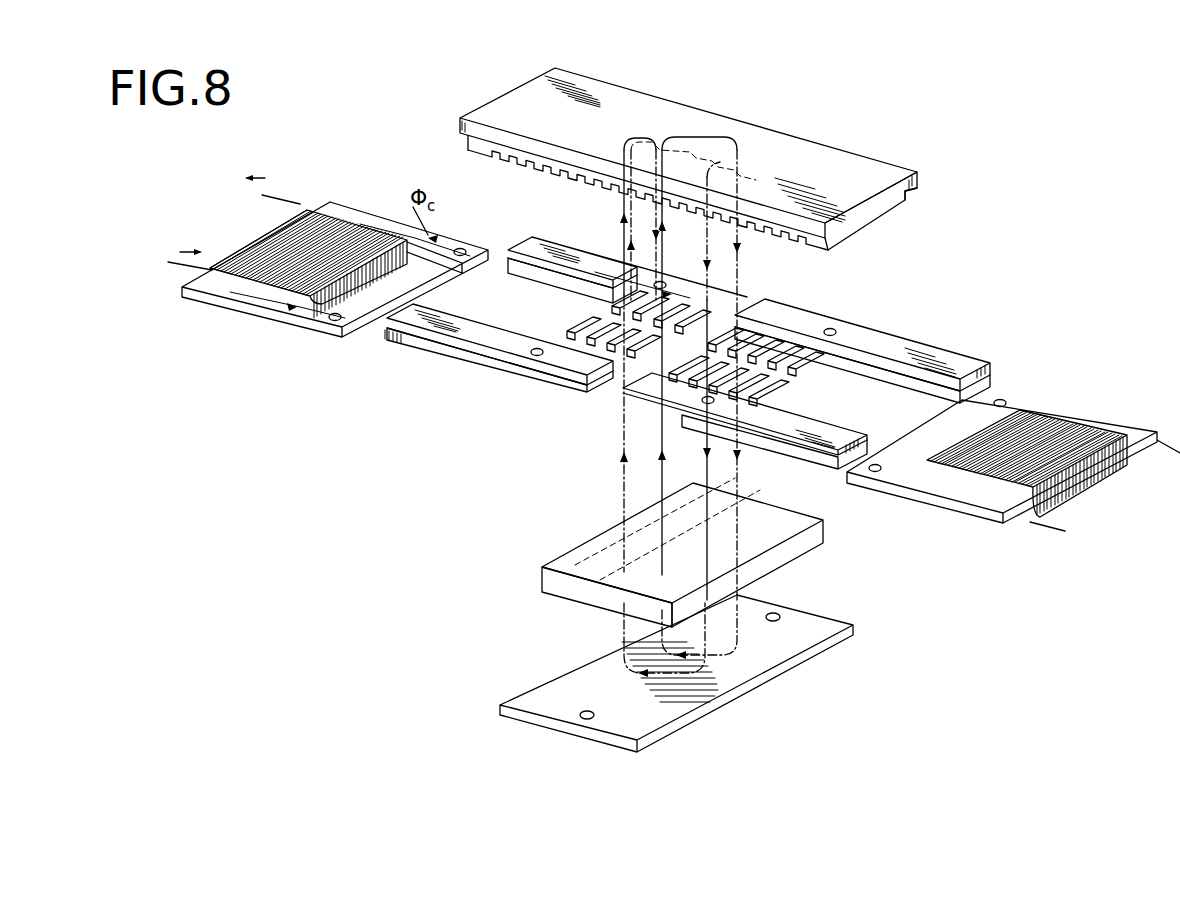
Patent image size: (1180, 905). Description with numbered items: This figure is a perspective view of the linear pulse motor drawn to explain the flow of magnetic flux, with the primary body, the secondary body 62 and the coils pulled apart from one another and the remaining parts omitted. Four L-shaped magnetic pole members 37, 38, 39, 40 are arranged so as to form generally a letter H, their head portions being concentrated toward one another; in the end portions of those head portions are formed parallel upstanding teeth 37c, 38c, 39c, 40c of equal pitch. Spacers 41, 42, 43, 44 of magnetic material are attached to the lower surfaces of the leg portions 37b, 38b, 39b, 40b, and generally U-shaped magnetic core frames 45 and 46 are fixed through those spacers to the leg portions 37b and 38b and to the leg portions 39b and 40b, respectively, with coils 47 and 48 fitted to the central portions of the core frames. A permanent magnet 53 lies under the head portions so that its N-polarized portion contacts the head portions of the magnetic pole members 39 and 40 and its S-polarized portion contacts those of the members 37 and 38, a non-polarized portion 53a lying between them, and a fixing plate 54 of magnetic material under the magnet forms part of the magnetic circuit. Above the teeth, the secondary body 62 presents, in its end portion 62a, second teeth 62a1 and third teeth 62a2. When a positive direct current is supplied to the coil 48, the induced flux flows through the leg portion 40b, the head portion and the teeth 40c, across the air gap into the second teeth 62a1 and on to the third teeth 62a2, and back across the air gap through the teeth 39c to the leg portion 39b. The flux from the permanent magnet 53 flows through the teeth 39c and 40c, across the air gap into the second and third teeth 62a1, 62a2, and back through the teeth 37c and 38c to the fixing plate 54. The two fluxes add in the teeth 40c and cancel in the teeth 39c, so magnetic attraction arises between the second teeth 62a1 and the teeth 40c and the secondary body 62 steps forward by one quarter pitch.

The secondary body 62 is at (723, 133).
The secondary body end portion 62a is at (862, 241).
The second teeth 62a1 is at (568, 175).
The third teeth 62a2 is at (725, 162).
The magnetic core frame 46 is at (340, 203).
The coil 48 is at (288, 240).
The magnetic pole member 39 is at (612, 260).
The leg portion 39b is at (540, 248).
The teeth 39c is at (612, 300).
The spacer 43 is at (523, 273).
The magnetic pole member 40 is at (553, 362).
The leg portion 40b is at (437, 333).
The teeth 40c is at (582, 337).
The spacer 44 is at (410, 353).
The magnetic pole member 37 is at (805, 323).
The leg portion 37b is at (908, 355).
The teeth 37c is at (757, 327).
The spacer 41 is at (992, 378).
The magnetic pole member 38 is at (757, 393).
The leg portion 38b is at (830, 430).
The teeth 38c is at (760, 360).
The spacer 42 is at (780, 448).
The magnetic core frame 45 is at (1062, 413).
The coil 47 is at (1062, 450).
The permanent magnet 53 is at (608, 563).
The non-polarized portion 53a is at (607, 593).
The fixing plate 54 is at (587, 685).